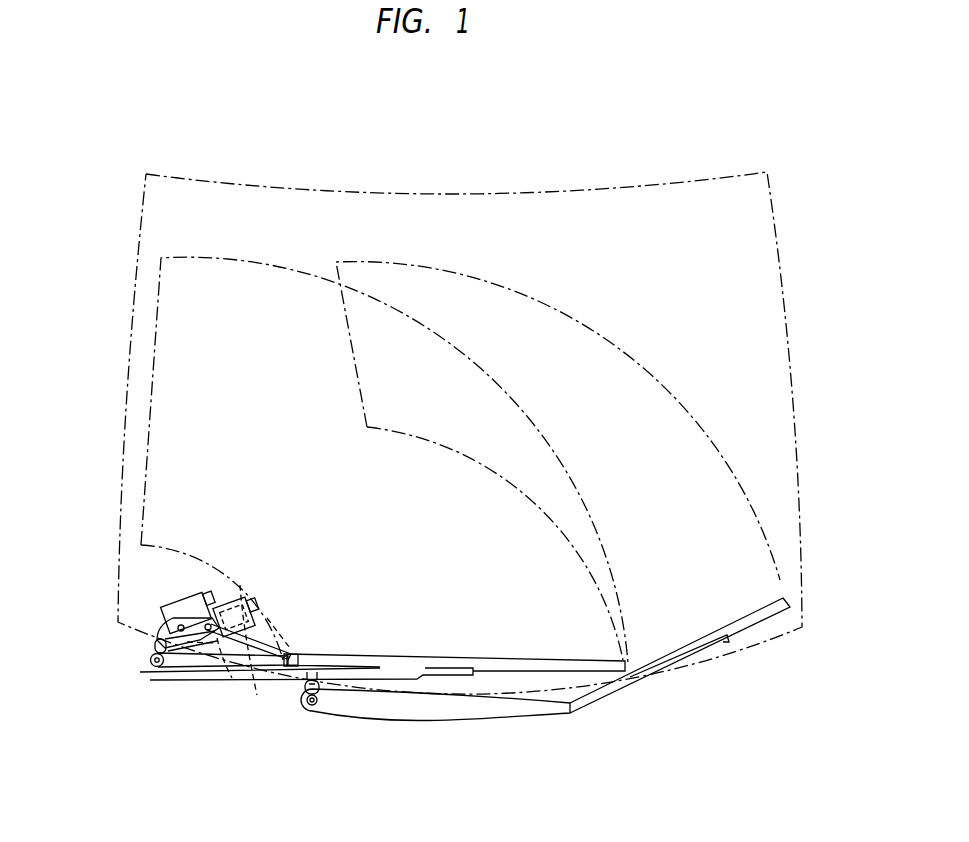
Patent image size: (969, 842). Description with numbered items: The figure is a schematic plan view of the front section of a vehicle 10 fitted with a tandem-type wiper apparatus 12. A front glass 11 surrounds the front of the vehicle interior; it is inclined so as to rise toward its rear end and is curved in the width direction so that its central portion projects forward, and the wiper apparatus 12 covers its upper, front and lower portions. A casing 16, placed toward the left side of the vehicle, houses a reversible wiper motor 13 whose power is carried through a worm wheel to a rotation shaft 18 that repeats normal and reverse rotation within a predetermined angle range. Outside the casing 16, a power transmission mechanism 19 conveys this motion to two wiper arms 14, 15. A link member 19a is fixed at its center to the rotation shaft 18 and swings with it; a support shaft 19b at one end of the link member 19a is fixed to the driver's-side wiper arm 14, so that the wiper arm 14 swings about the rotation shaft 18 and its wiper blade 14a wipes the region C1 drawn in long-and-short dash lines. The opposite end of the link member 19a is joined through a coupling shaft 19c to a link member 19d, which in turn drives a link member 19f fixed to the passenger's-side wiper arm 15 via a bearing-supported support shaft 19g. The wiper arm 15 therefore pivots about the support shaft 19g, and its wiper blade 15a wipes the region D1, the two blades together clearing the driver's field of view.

The vehicle 10 is at (106, 192).
The front glass 11 is at (666, 172).
The wiper apparatus 12 is at (276, 725).
The wiper motor 13 is at (243, 648).
The wiper arm 14 is at (195, 633).
The wiper blade 14a is at (511, 662).
The wiper arm 15 is at (413, 704).
The wiper blade 15a is at (745, 617).
The casing 16 is at (190, 604).
The rotation shaft 18 is at (165, 624).
The power transmission mechanism 19 is at (208, 710).
The link member 19a is at (182, 632).
The support shaft 19b is at (157, 667).
The coupling shaft 19c is at (212, 656).
The link member 19d is at (250, 630).
The link member 19f is at (308, 694).
The support shaft 19g is at (316, 707).
The region C1 is at (208, 247).
The region D1 is at (556, 292).